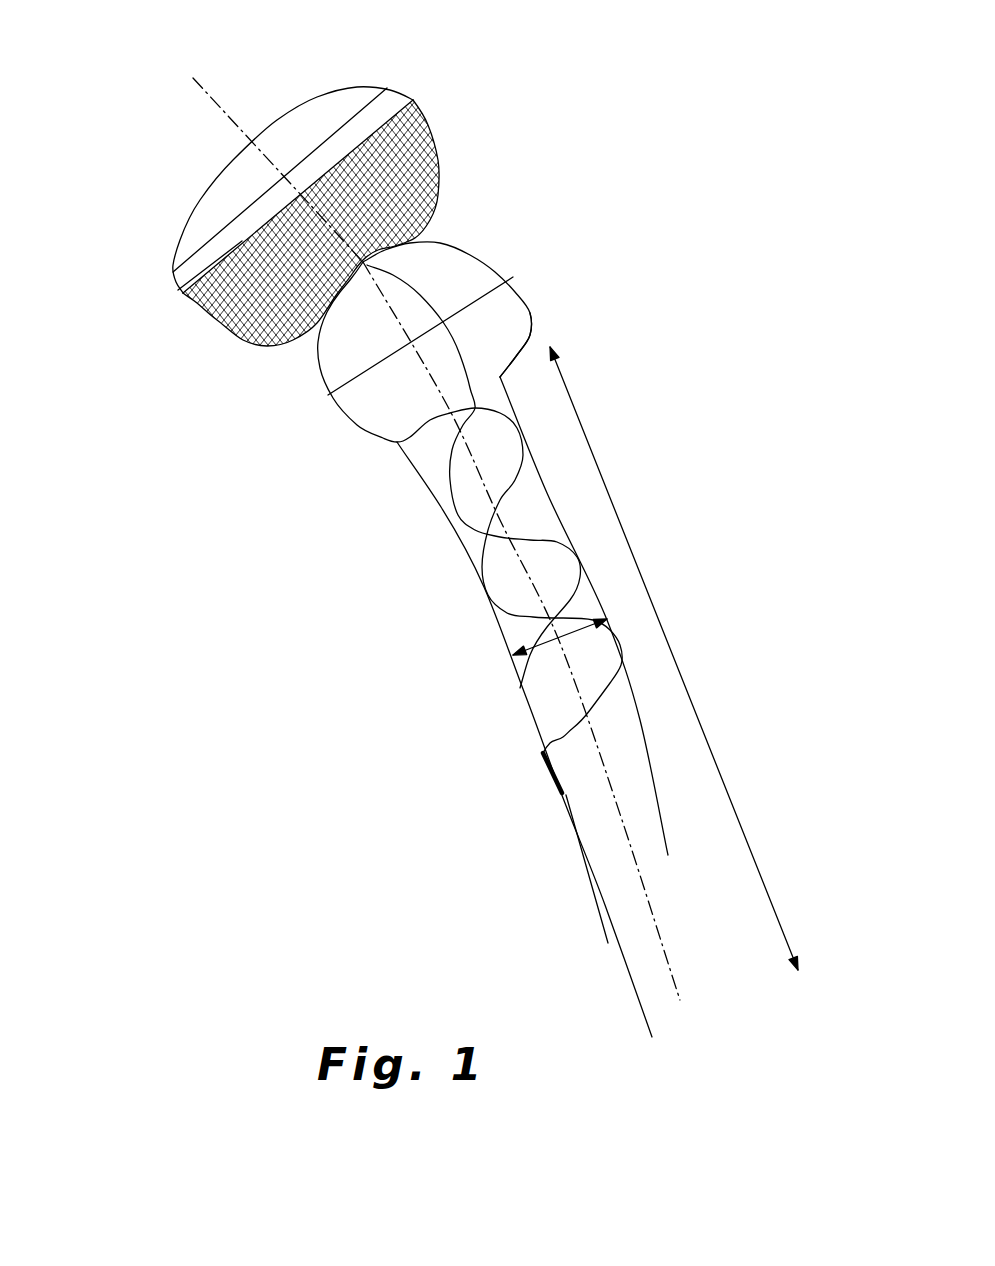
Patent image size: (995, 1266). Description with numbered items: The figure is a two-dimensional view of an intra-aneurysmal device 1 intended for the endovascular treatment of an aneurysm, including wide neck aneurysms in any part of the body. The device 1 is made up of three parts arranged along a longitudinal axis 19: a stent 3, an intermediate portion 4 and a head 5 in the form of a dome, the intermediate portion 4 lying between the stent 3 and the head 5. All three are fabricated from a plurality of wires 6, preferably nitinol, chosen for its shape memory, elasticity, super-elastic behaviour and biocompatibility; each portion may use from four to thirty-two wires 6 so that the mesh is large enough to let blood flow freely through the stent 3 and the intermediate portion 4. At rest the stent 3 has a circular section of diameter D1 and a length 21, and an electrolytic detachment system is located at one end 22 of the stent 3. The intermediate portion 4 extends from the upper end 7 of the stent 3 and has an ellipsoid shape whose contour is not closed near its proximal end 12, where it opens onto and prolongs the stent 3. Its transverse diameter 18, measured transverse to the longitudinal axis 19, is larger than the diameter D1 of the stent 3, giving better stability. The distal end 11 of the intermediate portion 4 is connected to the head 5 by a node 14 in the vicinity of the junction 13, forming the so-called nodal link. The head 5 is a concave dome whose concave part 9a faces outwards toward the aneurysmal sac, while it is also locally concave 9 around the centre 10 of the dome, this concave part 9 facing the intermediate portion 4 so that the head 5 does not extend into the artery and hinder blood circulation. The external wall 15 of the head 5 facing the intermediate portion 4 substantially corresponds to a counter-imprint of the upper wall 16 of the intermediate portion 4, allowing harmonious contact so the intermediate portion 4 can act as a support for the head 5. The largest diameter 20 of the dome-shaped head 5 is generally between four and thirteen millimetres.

The intra-aneurysmal device 1 is at (225, 513).
The stent 3 is at (597, 553).
The intermediate portion 4 is at (544, 285).
The head 5 is at (453, 143).
The wires 6 is at (237, 335).
The upper end of the stent 7 is at (509, 378).
The concave part of the head 9 is at (362, 263).
The concave part facing outwards 9a is at (176, 289).
The centre of the dome 10 is at (363, 257).
The distal end of the intermediate portion 11 is at (561, 305).
The proximal end of the intermediate portion 12 is at (460, 422).
The junction 13 is at (561, 305).
The node 14 is at (371, 265).
The external wall of the head 15 is at (368, 257).
The upper wall of the intermediate portion 16 is at (371, 250).
The transverse diameter of the intermediate portion 18 is at (387, 358).
The longitudinal axis 19 is at (203, 88).
The largest diameter of the head 20 is at (235, 215).
The length of the stent 21 is at (653, 602).
The end of the stent 22 is at (545, 816).
The diameter of the stent D1 is at (557, 639).